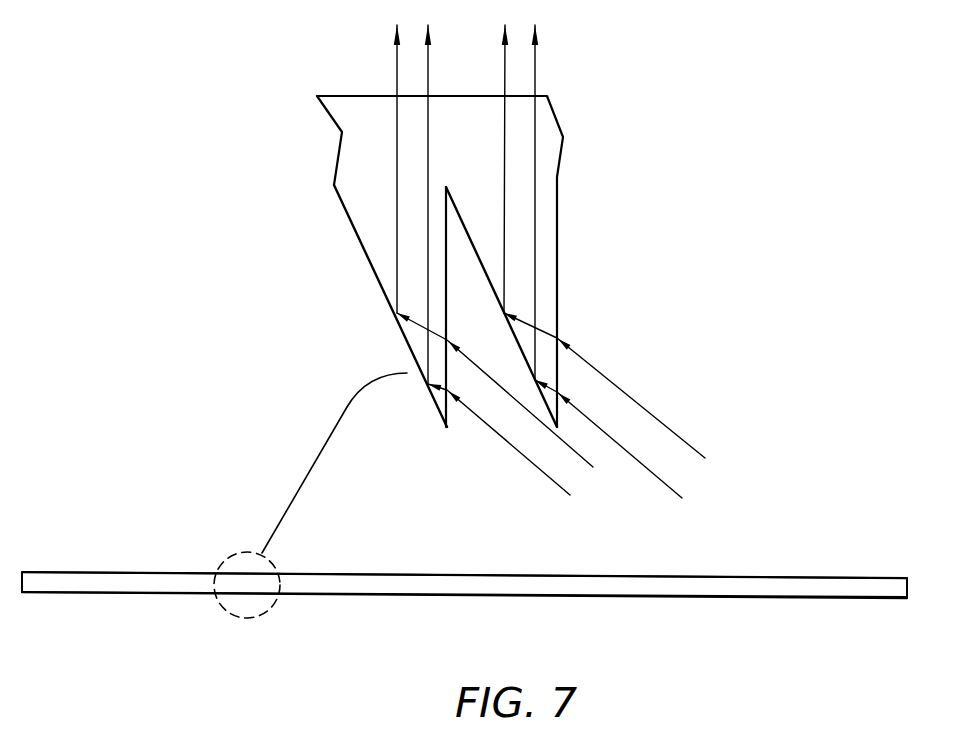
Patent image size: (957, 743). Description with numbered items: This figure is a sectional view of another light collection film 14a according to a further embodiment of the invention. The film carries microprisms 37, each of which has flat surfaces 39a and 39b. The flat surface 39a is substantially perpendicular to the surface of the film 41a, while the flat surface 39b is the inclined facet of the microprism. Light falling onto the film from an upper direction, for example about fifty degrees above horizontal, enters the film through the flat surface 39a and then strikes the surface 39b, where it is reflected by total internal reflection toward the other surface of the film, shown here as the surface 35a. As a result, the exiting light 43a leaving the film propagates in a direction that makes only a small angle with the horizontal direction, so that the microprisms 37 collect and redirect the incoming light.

The light collection film 14a is at (146, 392).
The light exit surface of light guide plate 35a is at (698, 577).
The microprisms 37 is at (369, 265).
The flat surface 39a is at (557, 267).
The flat surface 39b is at (477, 255).
The surface of the film 41a is at (668, 598).
The exiting light 43a is at (537, 57).